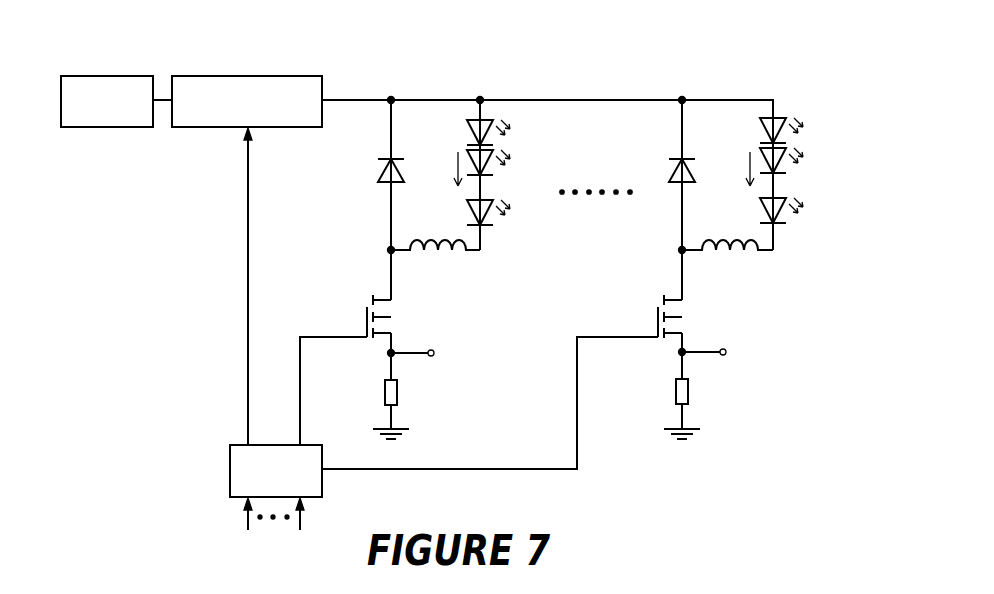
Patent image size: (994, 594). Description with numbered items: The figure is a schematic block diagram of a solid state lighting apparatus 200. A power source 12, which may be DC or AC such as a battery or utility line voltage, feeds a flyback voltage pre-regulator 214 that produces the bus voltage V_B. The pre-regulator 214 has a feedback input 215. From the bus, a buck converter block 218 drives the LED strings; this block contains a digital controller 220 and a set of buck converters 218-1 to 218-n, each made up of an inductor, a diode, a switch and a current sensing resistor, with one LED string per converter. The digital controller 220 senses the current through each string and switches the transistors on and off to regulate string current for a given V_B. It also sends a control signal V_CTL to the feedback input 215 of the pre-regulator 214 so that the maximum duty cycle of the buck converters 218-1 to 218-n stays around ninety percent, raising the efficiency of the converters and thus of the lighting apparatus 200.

The power source 12 is at (106, 76).
The flyback voltage pre-regulator 214 is at (251, 76).
The feedback input 215 is at (245, 132).
The buck converter block 218 is at (546, 85).
The buck converter 218-1 is at (452, 258).
The buck converter 218-n is at (738, 258).
The digital controller 220 is at (230, 468).
The lighting apparatus 200 is at (697, 62).